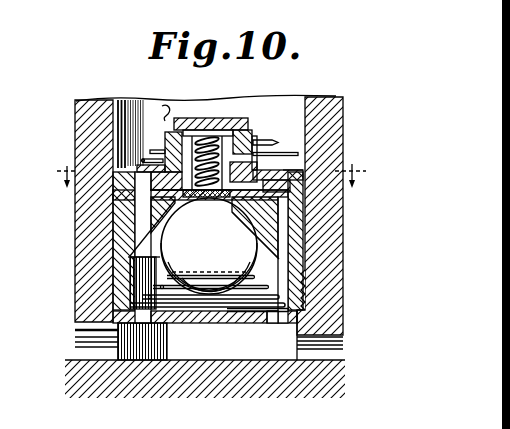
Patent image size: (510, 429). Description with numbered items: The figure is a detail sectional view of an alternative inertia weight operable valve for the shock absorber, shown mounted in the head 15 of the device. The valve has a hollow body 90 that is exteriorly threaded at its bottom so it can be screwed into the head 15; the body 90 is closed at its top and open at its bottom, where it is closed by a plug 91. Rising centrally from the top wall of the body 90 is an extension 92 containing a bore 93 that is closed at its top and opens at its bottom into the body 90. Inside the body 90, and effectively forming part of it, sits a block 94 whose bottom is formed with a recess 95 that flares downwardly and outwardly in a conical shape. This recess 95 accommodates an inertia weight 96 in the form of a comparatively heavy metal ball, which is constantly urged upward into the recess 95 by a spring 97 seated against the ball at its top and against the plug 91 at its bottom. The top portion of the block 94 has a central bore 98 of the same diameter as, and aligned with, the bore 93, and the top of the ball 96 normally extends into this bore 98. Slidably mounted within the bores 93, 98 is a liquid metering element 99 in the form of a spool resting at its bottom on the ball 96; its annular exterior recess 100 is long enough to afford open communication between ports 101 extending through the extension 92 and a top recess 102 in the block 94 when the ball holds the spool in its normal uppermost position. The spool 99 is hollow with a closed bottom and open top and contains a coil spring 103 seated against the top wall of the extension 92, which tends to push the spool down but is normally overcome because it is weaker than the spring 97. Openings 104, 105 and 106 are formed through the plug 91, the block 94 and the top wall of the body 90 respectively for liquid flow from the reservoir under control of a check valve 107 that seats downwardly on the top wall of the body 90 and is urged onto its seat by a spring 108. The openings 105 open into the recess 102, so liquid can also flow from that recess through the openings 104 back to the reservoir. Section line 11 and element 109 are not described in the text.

The section line 11 is at (211, 176).
The head 15 is at (315, 124).
The hollow body 90 is at (277, 237).
The plug 91 is at (183, 323).
The extension 92 is at (156, 113).
The bore 93 is at (190, 118).
The block 94 is at (155, 223).
The recess 95 is at (246, 284).
The inertia weight 96 is at (209, 246).
The spring 97 is at (237, 322).
The bore 98 is at (203, 253).
The liquid metering element 99 is at (252, 132).
The annular exterior recess 100 is at (262, 153).
The ports 101 is at (252, 140).
The top recess 102 is at (292, 188).
The coil spring 103 is at (262, 110).
The openings 104 is at (270, 322).
The openings 105 is at (268, 256).
The openings 106 is at (295, 163).
The check valve 107 is at (115, 158).
The spring 108 is at (146, 152).
The spring seat 109 is at (230, 198).